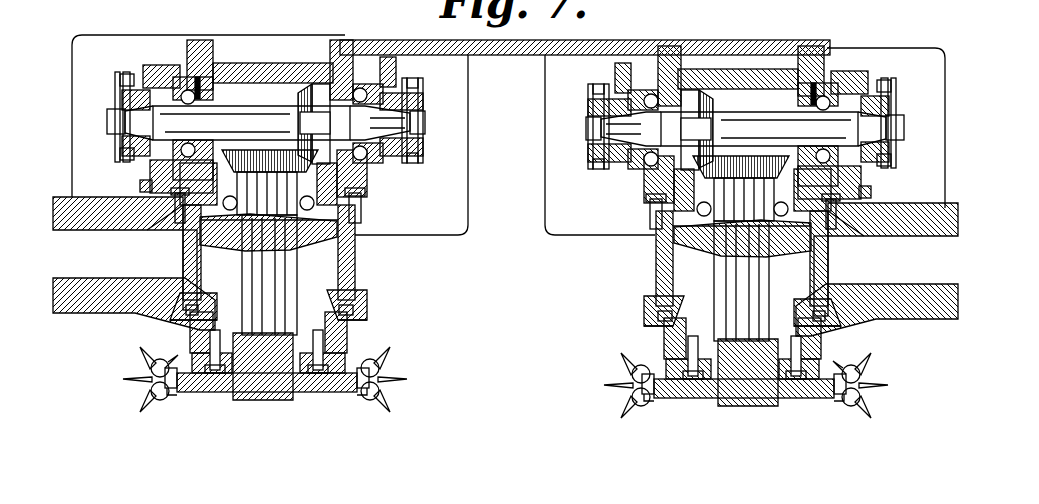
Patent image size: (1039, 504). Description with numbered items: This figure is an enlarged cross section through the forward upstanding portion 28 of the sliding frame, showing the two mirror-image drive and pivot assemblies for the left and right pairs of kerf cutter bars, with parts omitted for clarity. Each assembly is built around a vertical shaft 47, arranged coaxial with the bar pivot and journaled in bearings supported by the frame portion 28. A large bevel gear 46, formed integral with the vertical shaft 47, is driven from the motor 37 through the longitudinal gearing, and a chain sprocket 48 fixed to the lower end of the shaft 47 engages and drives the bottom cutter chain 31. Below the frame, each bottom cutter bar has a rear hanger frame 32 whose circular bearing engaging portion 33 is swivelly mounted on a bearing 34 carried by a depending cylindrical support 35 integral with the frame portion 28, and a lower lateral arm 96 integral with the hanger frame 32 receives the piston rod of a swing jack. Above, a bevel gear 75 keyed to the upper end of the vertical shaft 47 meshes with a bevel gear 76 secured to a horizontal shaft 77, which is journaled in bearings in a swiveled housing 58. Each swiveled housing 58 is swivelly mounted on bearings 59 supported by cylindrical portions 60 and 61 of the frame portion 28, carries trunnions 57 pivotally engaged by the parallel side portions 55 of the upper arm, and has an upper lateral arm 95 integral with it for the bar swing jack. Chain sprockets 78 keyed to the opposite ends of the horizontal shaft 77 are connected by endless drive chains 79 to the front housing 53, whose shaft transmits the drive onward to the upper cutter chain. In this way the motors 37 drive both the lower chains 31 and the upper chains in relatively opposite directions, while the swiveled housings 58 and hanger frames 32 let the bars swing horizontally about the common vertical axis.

The forward upstanding portion 28 is at (350, 268).
The cutter chain 31 is at (162, 398).
The rear hanger frame 32 is at (347, 332).
The circular bearing engaging portion 33 is at (343, 313).
The bearing 34 is at (345, 330).
The depending cylindrical support 35 is at (195, 345).
The motor 37 is at (555, 220).
The bevel gear 46 is at (327, 237).
The vertical shaft 47 is at (255, 275).
The chain sprocket 48 is at (218, 382).
The housing 53 is at (552, 27).
The side portions 55 is at (153, 72).
The trunnions 57 is at (117, 87).
The swiveled housing 58 is at (192, 63).
The bearings 59 is at (196, 80).
The cylindrical portion 60 is at (335, 50).
The cylindrical portion 61 is at (348, 210).
The bevel gear 75 is at (287, 157).
The bevel gear 76 is at (312, 100).
The horizontal shaft 77 is at (257, 117).
The chain sprockets 78 is at (125, 145).
The drive chains 79 is at (117, 77).
The lateral arm 95 is at (62, 203).
The lateral arm 96 is at (65, 293).